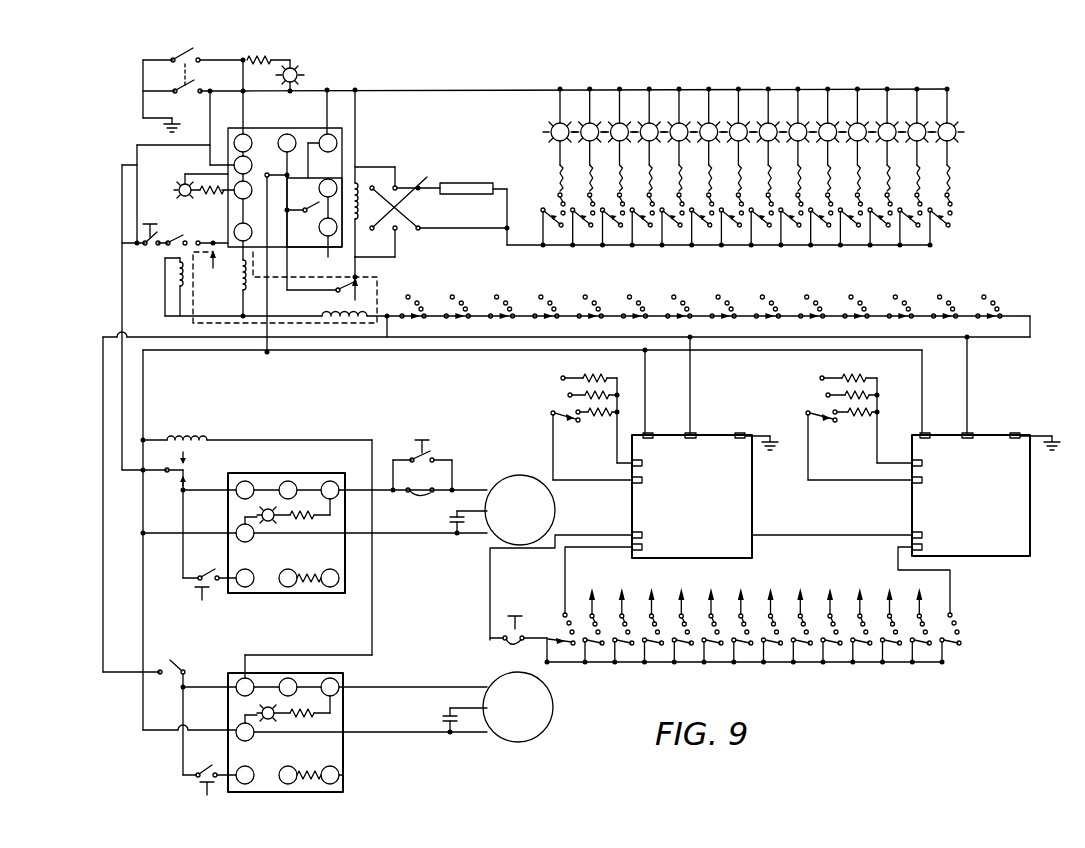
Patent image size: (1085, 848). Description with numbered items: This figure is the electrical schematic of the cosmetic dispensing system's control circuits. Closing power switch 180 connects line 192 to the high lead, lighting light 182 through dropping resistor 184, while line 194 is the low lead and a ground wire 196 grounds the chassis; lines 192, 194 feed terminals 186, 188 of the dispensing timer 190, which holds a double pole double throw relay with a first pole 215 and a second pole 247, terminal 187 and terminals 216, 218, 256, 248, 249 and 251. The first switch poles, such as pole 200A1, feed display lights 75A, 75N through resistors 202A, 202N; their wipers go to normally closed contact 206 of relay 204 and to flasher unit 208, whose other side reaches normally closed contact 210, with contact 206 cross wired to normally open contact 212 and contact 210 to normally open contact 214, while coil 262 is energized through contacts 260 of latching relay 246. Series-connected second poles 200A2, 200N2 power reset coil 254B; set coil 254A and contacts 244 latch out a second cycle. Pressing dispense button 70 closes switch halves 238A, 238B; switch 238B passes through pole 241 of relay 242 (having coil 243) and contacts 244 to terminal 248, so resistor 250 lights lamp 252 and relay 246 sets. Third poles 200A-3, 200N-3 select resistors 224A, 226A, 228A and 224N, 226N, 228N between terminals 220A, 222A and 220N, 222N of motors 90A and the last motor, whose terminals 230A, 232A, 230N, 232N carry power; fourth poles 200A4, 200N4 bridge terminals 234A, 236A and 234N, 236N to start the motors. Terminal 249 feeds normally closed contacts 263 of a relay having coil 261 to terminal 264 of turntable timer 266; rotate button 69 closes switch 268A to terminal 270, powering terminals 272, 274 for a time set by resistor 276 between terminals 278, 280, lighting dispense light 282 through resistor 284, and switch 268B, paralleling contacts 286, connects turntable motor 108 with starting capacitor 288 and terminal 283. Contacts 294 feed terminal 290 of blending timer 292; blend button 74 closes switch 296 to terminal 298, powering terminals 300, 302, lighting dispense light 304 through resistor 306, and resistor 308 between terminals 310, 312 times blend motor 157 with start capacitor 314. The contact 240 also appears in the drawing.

The power switch 180 is at (190, 40).
The line 192 is at (243, 58).
The dropping resistor 184 is at (262, 58).
The light 182 is at (300, 76).
The line 194 is at (204, 86).
The ground wire 196 is at (160, 112).
The terminal 186 is at (247, 134).
The terminal 187 is at (300, 126).
The terminal 188 is at (344, 128).
The dispensing timer 190 is at (336, 140).
The terminal 249 is at (234, 163).
The second relay pole 247 is at (275, 167).
The lamp 252 is at (178, 186).
The resistor 250 is at (213, 182).
The dispense button 70 is at (326, 410).
The relay 242 is at (172, 220).
The terminal 251 is at (236, 196).
The switch contact 240 is at (204, 230).
The terminal 248 is at (253, 223).
The terminal 256 is at (313, 191).
The first relay pole 215 is at (315, 209).
The terminal 218 is at (302, 219).
The terminal 216 is at (320, 233).
The normally open contact 212 is at (390, 197).
The coil 262 is at (193, 432).
The normally open contact 214 is at (394, 214).
The relay 204 is at (400, 184).
The normally closed contact 210 is at (422, 179).
The flasher unit 208 is at (470, 183).
The normally closed contact 206 is at (422, 227).
The pole 2 of dispensing switch 200A 200A2 is at (410, 298).
The display light 75A is at (552, 122).
The resistor 202A is at (558, 175).
The pole 1 of dispensing switch 200A 200A1 is at (541, 207).
The display light 75N is at (960, 128).
The resistor 202N is at (955, 180).
The pole 2 of dispensing switch 200N 200N2 is at (957, 218).
The dispense switch half 238B is at (144, 245).
The first pole 241 is at (166, 245).
The coil 243 is at (176, 278).
The contacts 244 is at (285, 286).
The set coil 254A is at (223, 289).
The contacts 260 is at (336, 293).
The latching relay 246 is at (217, 325).
The reset coil 254B is at (348, 322).
The coil 261 is at (177, 437).
The normally closed contacts 263 is at (189, 466).
The terminal 264 is at (248, 481).
The terminal 272 is at (292, 481).
The terminal 274 is at (334, 481).
The dispense light 282 is at (260, 514).
The resistor 284 is at (307, 516).
The terminal 283 is at (238, 540).
The terminal 270 is at (250, 570).
The resistor 276 is at (309, 574).
The switch 268A is at (192, 575).
The rotate button 69 is at (312, 524).
The terminal 278 is at (288, 588).
The terminal 280 is at (331, 588).
The turntable timer 266 is at (258, 595).
The switch 268B is at (436, 456).
The normally closed contacts 286 is at (416, 506).
The starting capacitor 288 is at (452, 535).
The turntable motor 108 is at (556, 513).
The resistor 228A is at (575, 374).
The resistor 226A is at (627, 373).
The pole 3 of dispensing switch 200A 200A-3 is at (560, 403).
The resistor 224A is at (605, 415).
The terminal 232A is at (660, 428).
The terminal 230A is at (696, 435).
The terminal 222A is at (644, 463).
The terminal 220A is at (644, 480).
The terminal 234A is at (645, 535).
The terminal 236A is at (644, 547).
The motor 90A is at (754, 511).
The resistor 228N is at (830, 374).
The resistor 226N is at (885, 373).
The pole 3 of dispensing switch 200N 200N-3 is at (818, 403).
The resistor 224N is at (862, 415).
The terminal 232N is at (940, 428).
The terminal 230N is at (973, 435).
The terminal 222N is at (924, 463).
The terminal 220N is at (924, 480).
The terminal 234N is at (925, 535).
The terminal 236N is at (924, 547).
The pole 4 of dispensing switch 200A 200A4 is at (562, 613).
The dispense switch half 238A is at (510, 643).
The pole 4 of dispensing switch 200N 200N4 is at (958, 614).
The normally open contacts 294 is at (172, 662).
The terminal 290 is at (243, 678).
The terminal 302 is at (339, 684).
The terminal 300 is at (292, 692).
The dispense light 304 is at (260, 710).
The resistor 306 is at (331, 716).
The start capacitor 314 is at (443, 720).
The switch 296 is at (205, 765).
The terminal 298 is at (239, 765).
The terminal 310 is at (290, 766).
The resistor 308 is at (313, 770).
The terminal 312 is at (345, 775).
The blend button 74 is at (202, 798).
The blending timer 292 is at (264, 789).
The blend motor 157 is at (554, 707).